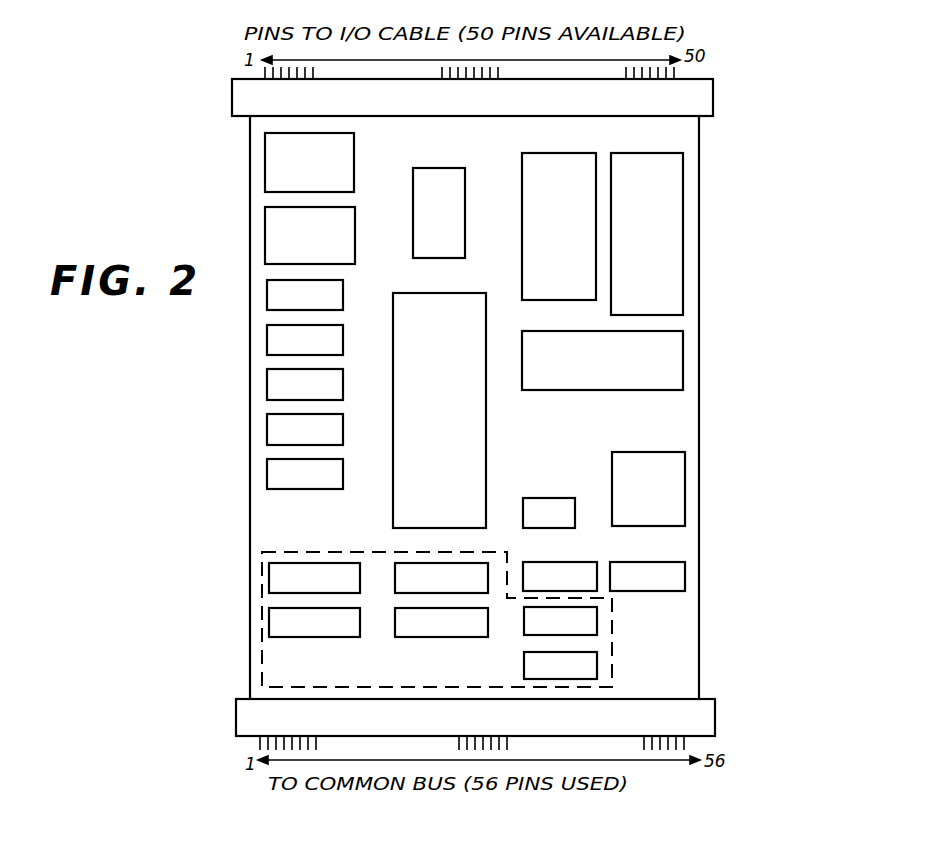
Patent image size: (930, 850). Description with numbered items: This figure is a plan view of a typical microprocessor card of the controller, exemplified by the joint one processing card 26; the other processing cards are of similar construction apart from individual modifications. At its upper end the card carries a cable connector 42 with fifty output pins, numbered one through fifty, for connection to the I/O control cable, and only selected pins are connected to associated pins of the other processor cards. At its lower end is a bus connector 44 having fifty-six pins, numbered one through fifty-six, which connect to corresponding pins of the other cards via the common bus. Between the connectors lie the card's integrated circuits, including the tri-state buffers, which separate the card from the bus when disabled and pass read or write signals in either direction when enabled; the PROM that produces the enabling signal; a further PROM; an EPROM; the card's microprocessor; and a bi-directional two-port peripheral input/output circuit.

The joint 1 processing card 26 is at (578, 447).
The J2 connector 42 is at (232, 111).
The bus connector 44 is at (236, 723).